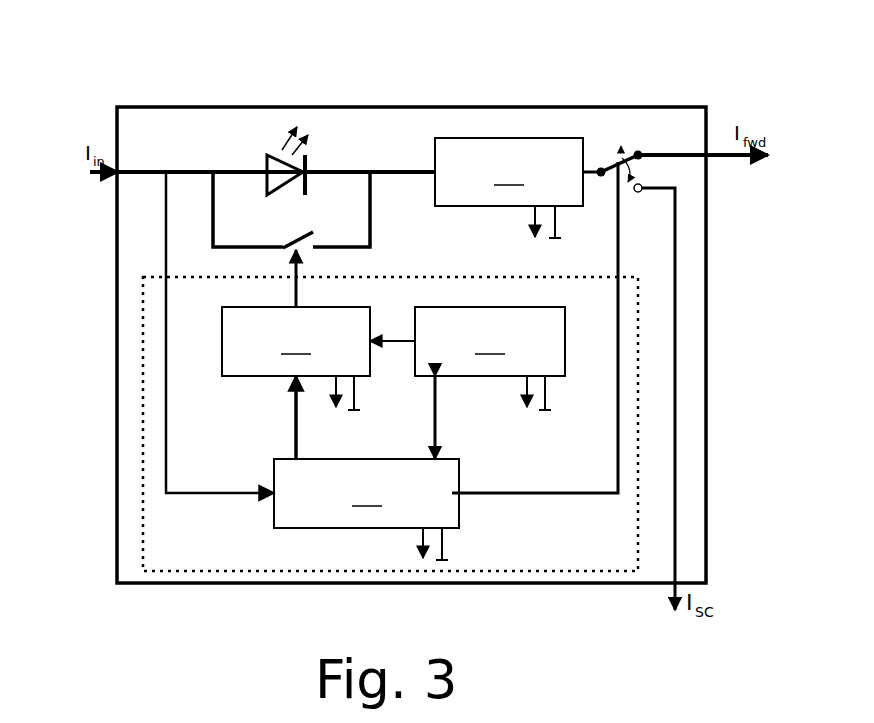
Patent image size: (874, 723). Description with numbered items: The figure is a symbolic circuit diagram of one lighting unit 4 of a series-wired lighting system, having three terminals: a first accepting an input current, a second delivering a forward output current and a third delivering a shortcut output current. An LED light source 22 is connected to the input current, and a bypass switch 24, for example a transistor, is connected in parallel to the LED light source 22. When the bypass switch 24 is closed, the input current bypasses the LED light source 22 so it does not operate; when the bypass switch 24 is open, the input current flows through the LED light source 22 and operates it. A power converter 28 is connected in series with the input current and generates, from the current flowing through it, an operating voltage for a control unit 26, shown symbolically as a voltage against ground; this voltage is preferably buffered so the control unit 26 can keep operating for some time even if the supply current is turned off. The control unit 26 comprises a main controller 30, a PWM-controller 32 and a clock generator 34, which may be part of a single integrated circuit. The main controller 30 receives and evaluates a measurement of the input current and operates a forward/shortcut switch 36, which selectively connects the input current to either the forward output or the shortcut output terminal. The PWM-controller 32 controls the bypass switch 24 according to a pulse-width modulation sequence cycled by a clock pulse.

The lighting unit 4 is at (485, 107).
The LED light source 22 is at (300, 170).
The bypass switch 24 is at (298, 234).
The control unit 26 is at (144, 414).
The power converter 28 is at (509, 188).
The main controller 30 is at (366, 509).
The PWM-controller 32 is at (296, 358).
The clock generator 34 is at (490, 358).
The forward/shortcut switch 36 is at (636, 150).